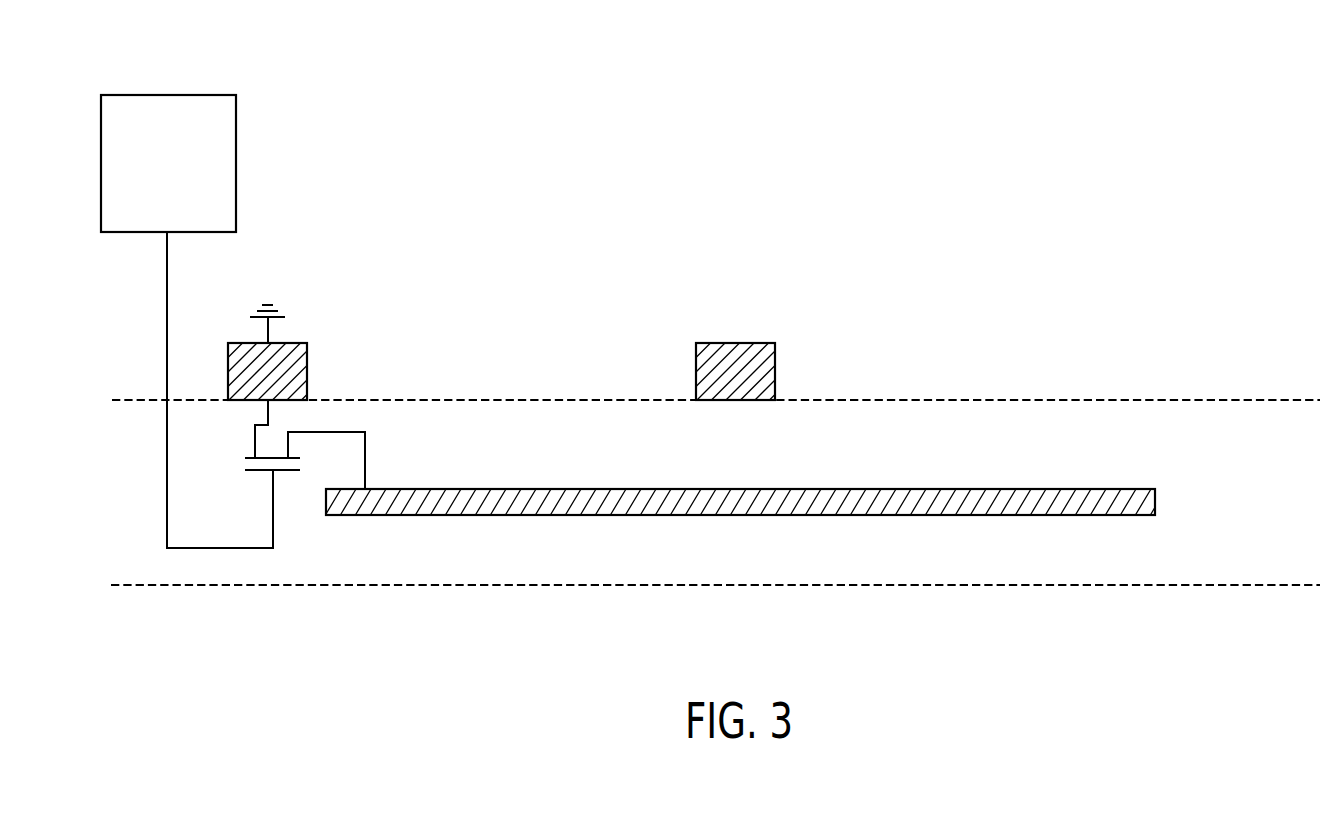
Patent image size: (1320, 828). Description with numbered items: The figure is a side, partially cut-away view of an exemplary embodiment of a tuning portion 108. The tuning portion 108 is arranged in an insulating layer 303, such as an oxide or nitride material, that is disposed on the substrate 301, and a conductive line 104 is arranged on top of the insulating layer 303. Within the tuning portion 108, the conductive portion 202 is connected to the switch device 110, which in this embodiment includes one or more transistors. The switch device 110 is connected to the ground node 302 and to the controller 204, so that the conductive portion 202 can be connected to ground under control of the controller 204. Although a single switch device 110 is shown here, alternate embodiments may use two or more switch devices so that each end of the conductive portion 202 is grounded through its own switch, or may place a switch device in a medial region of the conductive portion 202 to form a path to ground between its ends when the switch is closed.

The substrate 301 is at (1220, 80).
The controller 204 is at (236, 165).
The ground node 302 is at (307, 372).
The switch device 110 is at (258, 478).
The conductive portion 202 is at (585, 488).
The conductive line 104 is at (775, 373).
The tuning portion 108 is at (662, 433).
The insulating layer 303 is at (748, 465).